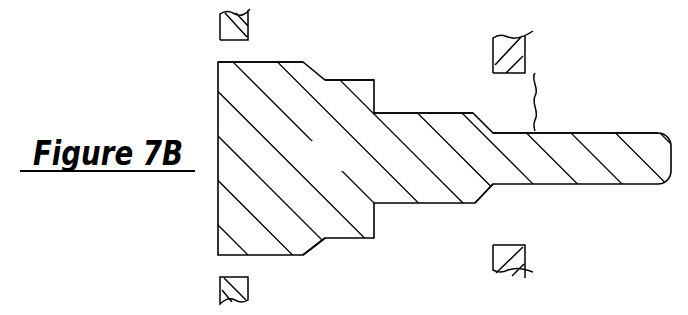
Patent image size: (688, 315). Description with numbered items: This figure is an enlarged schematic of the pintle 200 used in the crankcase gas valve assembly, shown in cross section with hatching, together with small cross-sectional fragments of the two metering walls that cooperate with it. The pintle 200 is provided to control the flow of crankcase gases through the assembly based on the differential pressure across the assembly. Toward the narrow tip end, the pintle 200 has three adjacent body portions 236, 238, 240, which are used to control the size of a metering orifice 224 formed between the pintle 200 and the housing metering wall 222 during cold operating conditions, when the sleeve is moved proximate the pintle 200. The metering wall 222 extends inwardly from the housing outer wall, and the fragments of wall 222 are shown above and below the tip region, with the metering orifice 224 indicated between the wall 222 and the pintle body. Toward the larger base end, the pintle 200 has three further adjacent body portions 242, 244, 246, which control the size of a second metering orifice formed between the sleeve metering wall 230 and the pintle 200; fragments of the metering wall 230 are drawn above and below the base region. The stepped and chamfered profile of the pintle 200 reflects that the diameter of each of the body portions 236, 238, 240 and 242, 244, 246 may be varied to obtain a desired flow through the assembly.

The pintle 200 is at (345, 167).
The metering wall 222 is at (513, 52).
The metering orifice 224 is at (538, 102).
The metering wall 230 is at (222, 20).
The body portion 236 is at (665, 128).
The body portion 238 is at (498, 203).
The body portion 240 is at (480, 110).
The body portion 242 is at (372, 77).
The body portion 244 is at (330, 258).
The body portion 246 is at (298, 62).